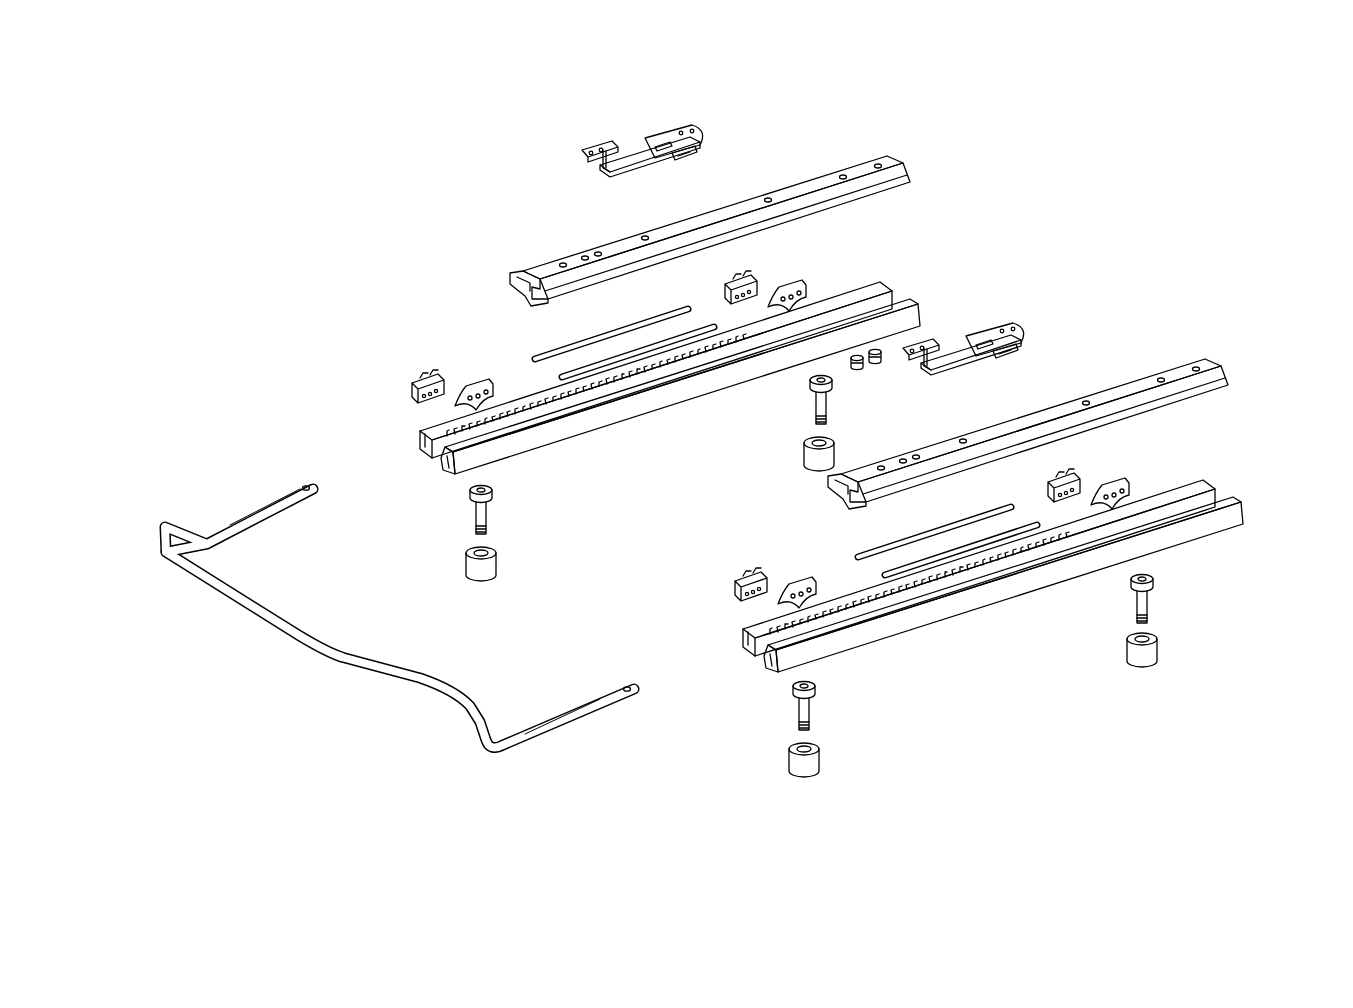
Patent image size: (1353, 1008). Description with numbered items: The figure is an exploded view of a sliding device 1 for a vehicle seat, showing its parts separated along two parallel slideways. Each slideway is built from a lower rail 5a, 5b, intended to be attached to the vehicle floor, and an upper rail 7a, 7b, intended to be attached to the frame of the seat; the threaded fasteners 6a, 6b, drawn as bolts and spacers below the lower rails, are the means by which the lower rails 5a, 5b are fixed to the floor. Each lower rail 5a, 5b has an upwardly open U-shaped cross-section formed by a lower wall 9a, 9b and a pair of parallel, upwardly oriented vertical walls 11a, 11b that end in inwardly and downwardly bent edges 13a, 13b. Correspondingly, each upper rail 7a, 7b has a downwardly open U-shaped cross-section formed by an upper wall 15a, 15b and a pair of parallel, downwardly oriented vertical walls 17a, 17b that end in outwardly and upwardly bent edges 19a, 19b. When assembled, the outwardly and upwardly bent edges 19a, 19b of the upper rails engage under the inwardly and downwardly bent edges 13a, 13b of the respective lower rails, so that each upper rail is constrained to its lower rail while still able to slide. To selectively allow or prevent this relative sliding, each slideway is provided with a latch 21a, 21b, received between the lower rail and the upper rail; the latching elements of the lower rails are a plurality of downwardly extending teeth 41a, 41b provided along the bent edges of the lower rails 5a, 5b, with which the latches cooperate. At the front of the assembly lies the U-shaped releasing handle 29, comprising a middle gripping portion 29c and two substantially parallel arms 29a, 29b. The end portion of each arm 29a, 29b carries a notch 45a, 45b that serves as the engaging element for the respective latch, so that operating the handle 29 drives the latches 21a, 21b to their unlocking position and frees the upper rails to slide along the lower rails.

The sliding device 1 is at (1132, 229).
The lower rail 5a is at (620, 422).
The lower rail 5b is at (969, 607).
The threaded fastener 6a is at (802, 447).
The threaded fastener 6b is at (1160, 652).
The upper rail 7a is at (888, 157).
The upper rail 7b is at (1021, 402).
The lower wall 9a is at (438, 470).
The lower wall 9b is at (737, 681).
The vertical wall 11a is at (535, 437).
The vertical wall 11b is at (1004, 592).
The inwardly and downwardly bent edge 13a is at (440, 466).
The inwardly and downwardly bent edge 13b is at (968, 548).
The upper wall 15a is at (793, 192).
The upper wall 15b is at (1031, 401).
The vertical wall 17a is at (545, 282).
The vertical wall 17b is at (1082, 434).
The outwardly and upwardly bent edge 19a is at (540, 306).
The outwardly and upwardly bent edge 19b is at (801, 494).
The latch 21a is at (677, 128).
The latch 21b is at (963, 317).
The releasing handle 29 is at (381, 703).
The arm 29a is at (212, 525).
The arm 29b is at (550, 723).
The middle gripping portion 29c is at (297, 638).
The teeth 41a is at (533, 413).
The teeth 41b is at (865, 583).
The notch 45a is at (310, 485).
The notch 45b is at (633, 685).